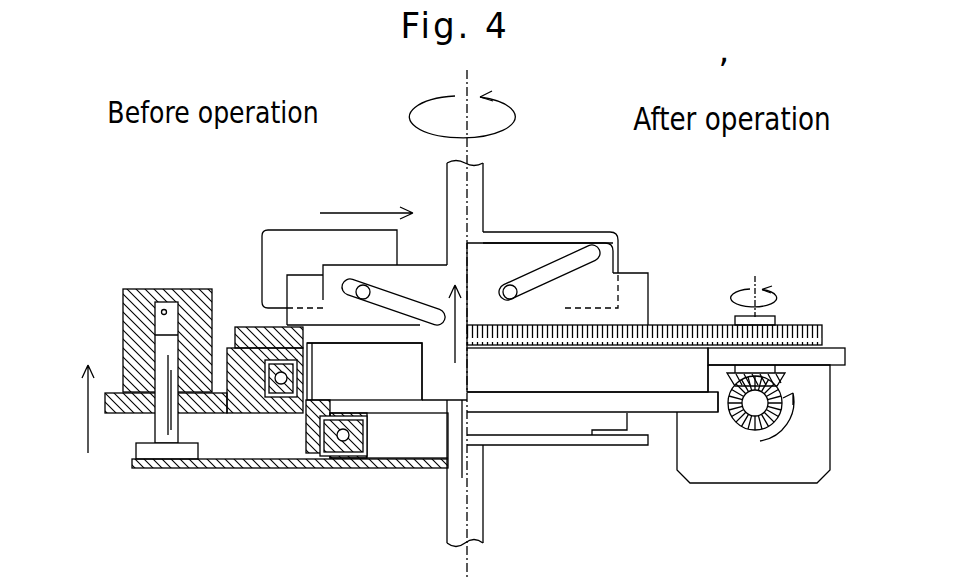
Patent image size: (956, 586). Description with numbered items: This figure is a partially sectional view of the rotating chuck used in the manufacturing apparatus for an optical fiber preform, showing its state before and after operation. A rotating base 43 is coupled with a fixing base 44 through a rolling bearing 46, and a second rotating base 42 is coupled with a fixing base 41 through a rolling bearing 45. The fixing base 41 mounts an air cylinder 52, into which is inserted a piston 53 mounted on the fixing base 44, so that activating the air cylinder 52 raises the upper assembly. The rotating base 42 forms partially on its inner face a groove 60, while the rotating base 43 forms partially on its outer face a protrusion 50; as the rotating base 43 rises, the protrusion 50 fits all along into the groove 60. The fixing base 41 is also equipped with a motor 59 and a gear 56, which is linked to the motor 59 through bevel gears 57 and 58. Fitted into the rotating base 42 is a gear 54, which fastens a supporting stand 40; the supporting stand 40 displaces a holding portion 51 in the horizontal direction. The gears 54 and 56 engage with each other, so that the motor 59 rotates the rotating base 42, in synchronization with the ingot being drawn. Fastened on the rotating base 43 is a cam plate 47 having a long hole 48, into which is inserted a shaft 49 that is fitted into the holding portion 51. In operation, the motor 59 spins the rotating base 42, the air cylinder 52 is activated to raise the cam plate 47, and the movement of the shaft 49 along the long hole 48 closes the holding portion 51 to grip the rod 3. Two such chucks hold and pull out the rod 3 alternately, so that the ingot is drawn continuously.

The rod 3 is at (522, 538).
The supporting stand 40 is at (634, 276).
The fixing base 41 is at (96, 463).
The rotating base 42 is at (260, 482).
The rotating base 43 is at (326, 484).
The fixing base 44 is at (181, 516).
The rolling bearing 45 is at (240, 419).
The rolling bearing 46 is at (394, 436).
The cam plate 47 is at (432, 282).
The long hole 48 is at (401, 357).
The shaft 49 is at (362, 288).
The protrusion 50 is at (292, 517).
The holding portion 51 is at (274, 255).
The air cylinder 52 is at (143, 300).
The piston 53 is at (165, 355).
The gear 54 is at (690, 266).
The gear 56 is at (818, 267).
The bevel gear 57 is at (845, 388).
The bevel gear 58 is at (730, 418).
The motor 59 is at (714, 518).
The groove 60 is at (331, 366).